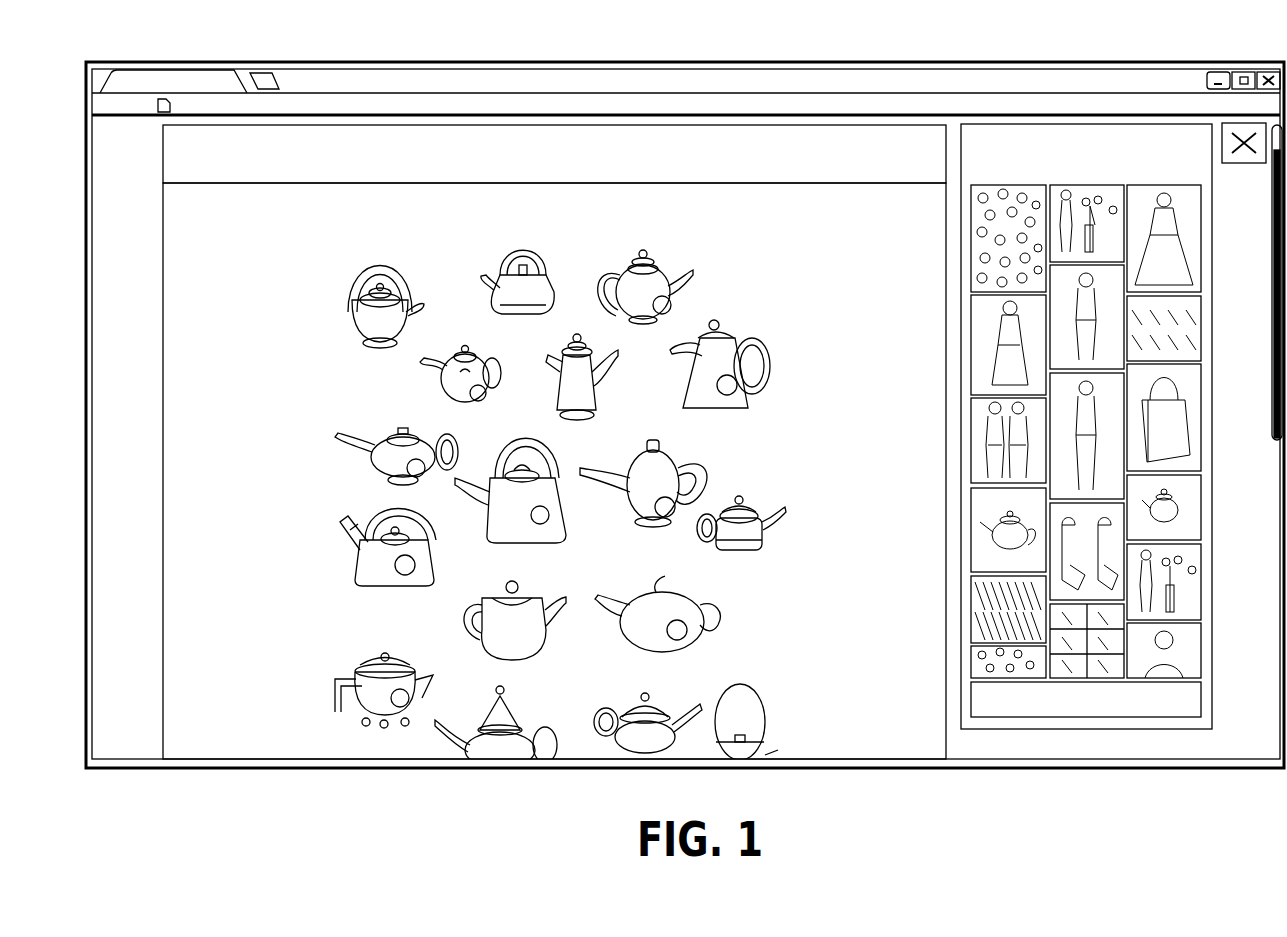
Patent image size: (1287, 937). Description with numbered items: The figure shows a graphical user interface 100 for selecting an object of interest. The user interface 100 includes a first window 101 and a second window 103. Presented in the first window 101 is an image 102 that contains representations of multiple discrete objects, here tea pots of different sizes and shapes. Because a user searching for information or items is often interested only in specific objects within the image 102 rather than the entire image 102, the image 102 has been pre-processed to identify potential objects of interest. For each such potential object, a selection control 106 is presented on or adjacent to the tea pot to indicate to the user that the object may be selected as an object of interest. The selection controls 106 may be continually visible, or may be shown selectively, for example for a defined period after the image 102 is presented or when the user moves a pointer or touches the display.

The user interface 100 is at (693, 98).
The first window 101 is at (470, 183).
The image 102 is at (530, 198).
The second window 103 is at (1107, 190).
The selection control 106 is at (740, 393).